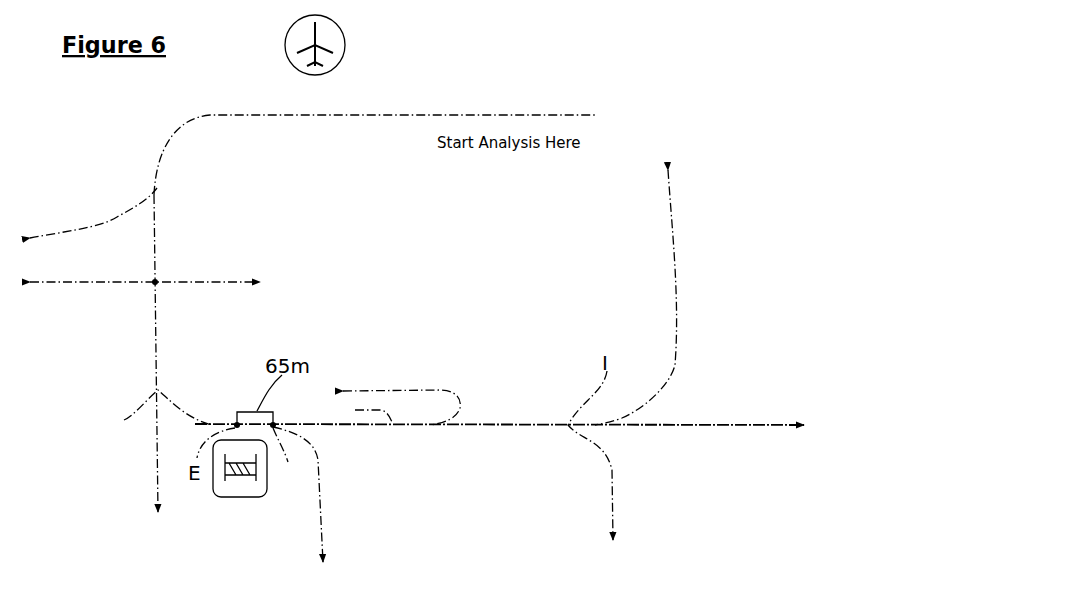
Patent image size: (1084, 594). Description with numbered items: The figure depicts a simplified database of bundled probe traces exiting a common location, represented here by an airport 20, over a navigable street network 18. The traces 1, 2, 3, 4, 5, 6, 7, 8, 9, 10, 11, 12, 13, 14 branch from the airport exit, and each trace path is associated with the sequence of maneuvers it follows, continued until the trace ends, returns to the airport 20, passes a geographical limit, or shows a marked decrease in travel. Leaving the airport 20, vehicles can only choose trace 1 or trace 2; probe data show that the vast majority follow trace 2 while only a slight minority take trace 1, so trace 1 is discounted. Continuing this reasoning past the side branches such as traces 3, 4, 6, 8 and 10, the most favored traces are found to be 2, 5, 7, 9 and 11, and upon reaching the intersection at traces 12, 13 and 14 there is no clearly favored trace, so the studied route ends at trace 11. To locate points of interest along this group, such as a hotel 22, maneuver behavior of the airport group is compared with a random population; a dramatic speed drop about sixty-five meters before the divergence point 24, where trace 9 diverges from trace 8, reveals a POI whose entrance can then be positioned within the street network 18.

The trace 1 is at (116, 217).
The trace 2 is at (157, 230).
The trace 3 is at (107, 283).
The trace 4 is at (198, 283).
The trace 5 is at (162, 323).
The trace 6 is at (159, 413).
The trace 7 is at (197, 421).
The trace 8 is at (318, 457).
The trace 9 is at (360, 413).
The trace 10 is at (428, 386).
The trace 11 is at (508, 425).
The trace 12 is at (613, 473).
The trace 13 is at (725, 424).
The trace 14 is at (678, 373).
The navigable street network 18 is at (678, 133).
The airport 20 is at (346, 50).
The hotel 22 is at (243, 498).
The divergence point 24 is at (286, 458).